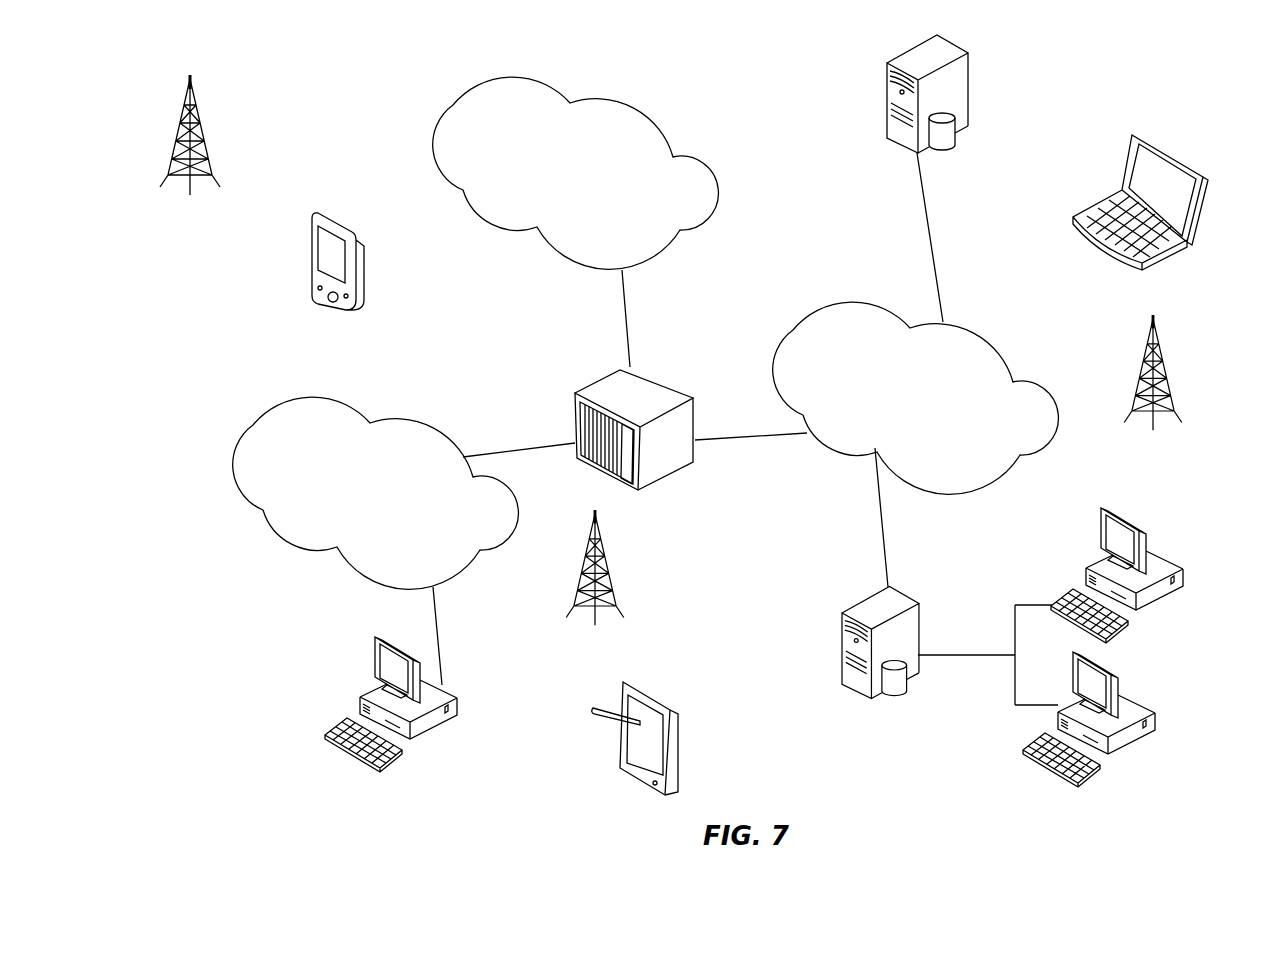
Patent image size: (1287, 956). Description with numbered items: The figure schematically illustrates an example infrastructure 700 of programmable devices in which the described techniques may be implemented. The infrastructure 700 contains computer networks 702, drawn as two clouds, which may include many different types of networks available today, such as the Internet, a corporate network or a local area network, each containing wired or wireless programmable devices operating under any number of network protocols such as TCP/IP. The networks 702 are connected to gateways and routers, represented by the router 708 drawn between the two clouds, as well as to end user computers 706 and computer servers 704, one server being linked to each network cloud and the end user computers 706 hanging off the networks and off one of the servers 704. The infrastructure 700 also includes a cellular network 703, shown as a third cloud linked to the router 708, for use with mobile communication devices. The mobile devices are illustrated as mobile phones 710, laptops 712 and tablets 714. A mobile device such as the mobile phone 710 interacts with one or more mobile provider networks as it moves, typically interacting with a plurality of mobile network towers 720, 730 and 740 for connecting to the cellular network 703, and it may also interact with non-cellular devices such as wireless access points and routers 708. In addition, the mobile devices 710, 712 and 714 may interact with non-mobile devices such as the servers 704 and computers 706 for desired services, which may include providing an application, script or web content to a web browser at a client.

The infrastructure 700 is at (1053, 130).
The computer networks 702 is at (1010, 355).
The cellular network 703 is at (620, 110).
The computer servers 704 is at (836, 632).
The end user computers 706 is at (1140, 700).
The gateways and routers 708 is at (658, 378).
The mobile phones 710 is at (345, 218).
The laptops 712 is at (1180, 160).
The tablets 714 is at (660, 697).
The mobile network tower 720 is at (595, 585).
The mobile network tower 730 is at (1153, 388).
The mobile network tower 740 is at (190, 152).